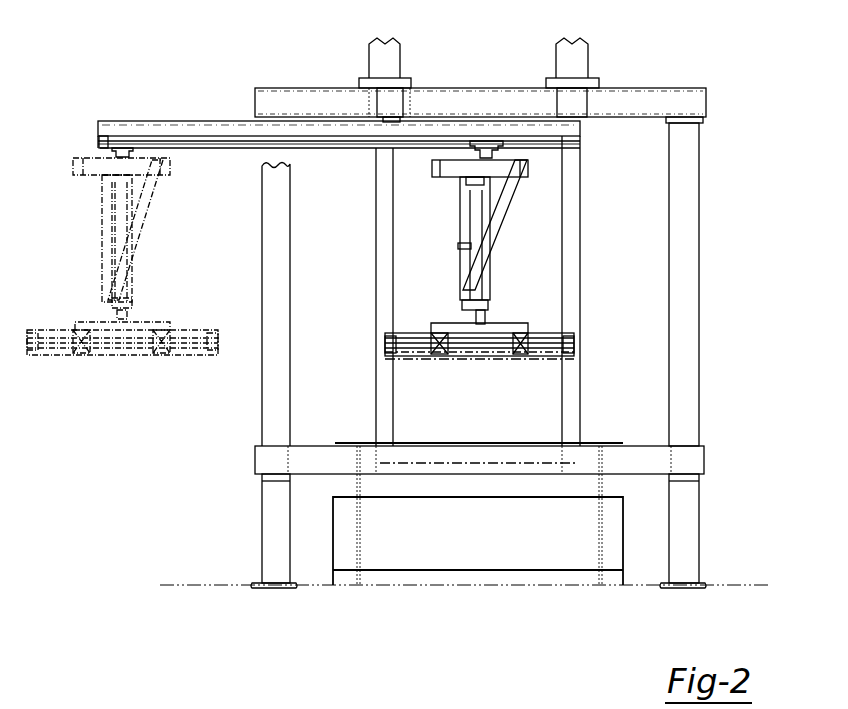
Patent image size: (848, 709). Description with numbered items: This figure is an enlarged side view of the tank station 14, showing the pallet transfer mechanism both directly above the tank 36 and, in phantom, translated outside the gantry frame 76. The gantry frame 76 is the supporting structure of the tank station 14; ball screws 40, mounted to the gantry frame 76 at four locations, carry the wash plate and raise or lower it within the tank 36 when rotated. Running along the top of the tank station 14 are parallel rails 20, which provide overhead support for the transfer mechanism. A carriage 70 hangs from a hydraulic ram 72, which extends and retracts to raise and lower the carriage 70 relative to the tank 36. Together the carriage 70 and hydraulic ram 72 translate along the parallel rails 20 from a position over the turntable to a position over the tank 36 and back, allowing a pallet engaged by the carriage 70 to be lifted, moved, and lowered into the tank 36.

The tank station 14 is at (746, 175).
The parallel rails 20 is at (187, 126).
The tank 36 is at (347, 532).
The ball screws 40 is at (373, 67).
The carriage 70 is at (450, 326).
The hydraulic ram 72 is at (483, 283).
The gantry frame 76 is at (688, 315).